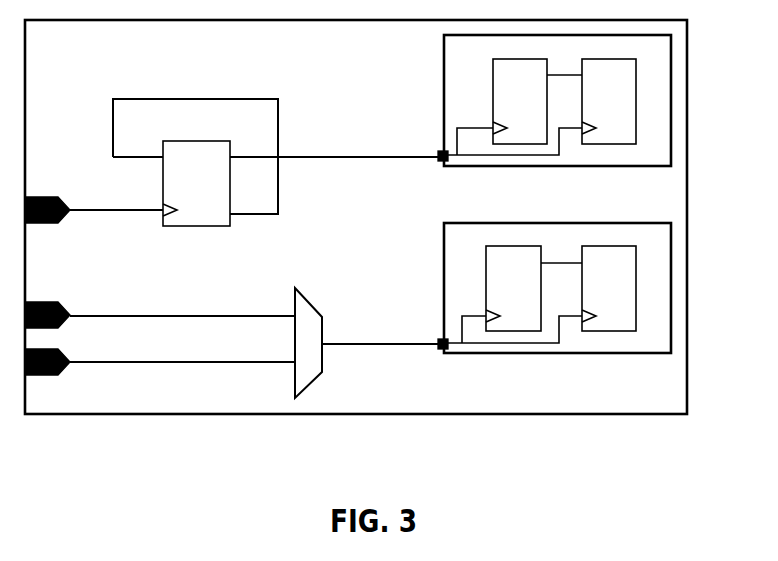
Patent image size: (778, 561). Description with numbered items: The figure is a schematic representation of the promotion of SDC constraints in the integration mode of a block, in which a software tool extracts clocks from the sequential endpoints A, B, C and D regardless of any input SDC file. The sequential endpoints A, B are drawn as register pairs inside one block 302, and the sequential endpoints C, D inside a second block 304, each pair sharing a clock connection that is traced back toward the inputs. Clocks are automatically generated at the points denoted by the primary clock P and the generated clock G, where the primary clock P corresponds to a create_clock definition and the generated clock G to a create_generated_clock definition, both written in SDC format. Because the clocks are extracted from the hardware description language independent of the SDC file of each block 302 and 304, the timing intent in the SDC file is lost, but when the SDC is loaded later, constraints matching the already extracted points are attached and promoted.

The block 302 is at (596, 100).
The block 304 is at (596, 288).
The generated clock G is at (278, 173).
The primary clock P is at (160, 286).
The sequential endpoint A is at (502, 107).
The sequential endpoint B is at (539, 107).
The sequential endpoint C is at (501, 294).
The sequential endpoint D is at (539, 294).